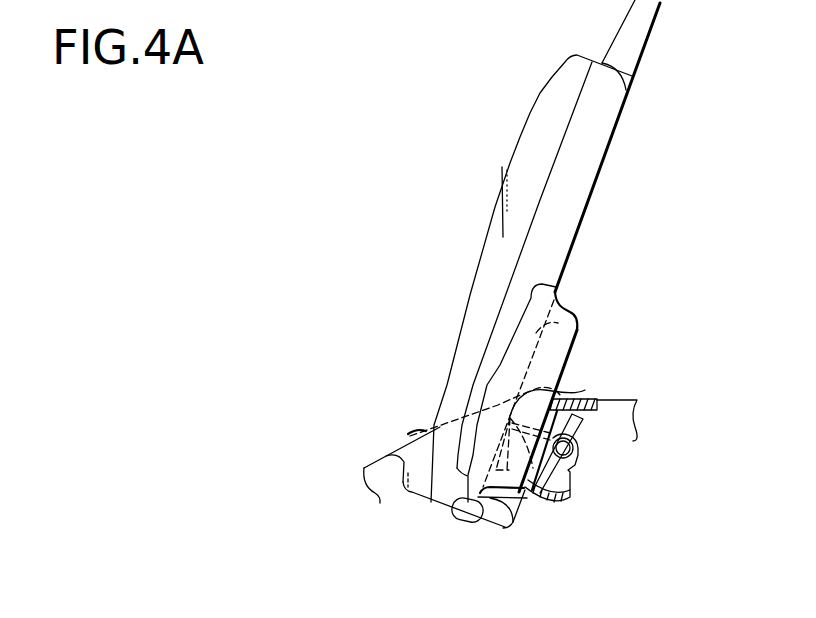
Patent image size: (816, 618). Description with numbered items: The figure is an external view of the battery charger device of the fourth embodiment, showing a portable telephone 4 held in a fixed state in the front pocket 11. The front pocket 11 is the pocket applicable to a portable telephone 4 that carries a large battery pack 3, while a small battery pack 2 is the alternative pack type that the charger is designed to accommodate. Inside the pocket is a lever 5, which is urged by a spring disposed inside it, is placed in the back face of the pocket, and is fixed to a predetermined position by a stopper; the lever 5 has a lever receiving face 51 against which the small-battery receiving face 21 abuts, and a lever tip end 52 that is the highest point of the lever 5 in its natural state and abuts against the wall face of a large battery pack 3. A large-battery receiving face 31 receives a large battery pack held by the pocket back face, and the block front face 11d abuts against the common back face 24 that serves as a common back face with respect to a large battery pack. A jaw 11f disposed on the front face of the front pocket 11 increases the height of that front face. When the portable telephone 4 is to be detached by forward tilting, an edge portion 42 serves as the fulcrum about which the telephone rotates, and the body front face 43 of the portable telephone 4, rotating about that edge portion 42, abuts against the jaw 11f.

The small battery pack 2 is at (563, 304).
The large battery pack 3 is at (578, 347).
The portable telephone 4 is at (538, 120).
The lever 5 is at (572, 498).
The front pocket 11 is at (410, 503).
The block front face 11d is at (487, 500).
The jaw 11f is at (410, 433).
The small-battery receiving face 21 is at (510, 416).
The common back face 24 is at (450, 505).
The large-battery receiving face 31 is at (510, 513).
The edge portion 42 is at (380, 503).
The body front face 43 is at (411, 433).
The lever receiving face 51 is at (578, 467).
The lever tip end 52 is at (585, 390).